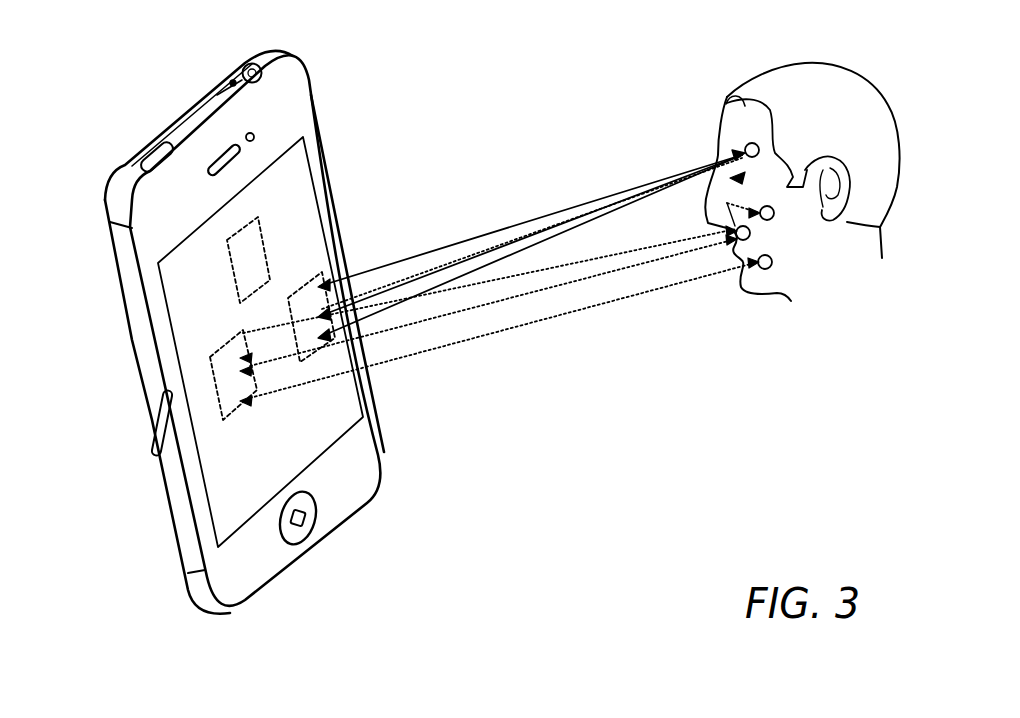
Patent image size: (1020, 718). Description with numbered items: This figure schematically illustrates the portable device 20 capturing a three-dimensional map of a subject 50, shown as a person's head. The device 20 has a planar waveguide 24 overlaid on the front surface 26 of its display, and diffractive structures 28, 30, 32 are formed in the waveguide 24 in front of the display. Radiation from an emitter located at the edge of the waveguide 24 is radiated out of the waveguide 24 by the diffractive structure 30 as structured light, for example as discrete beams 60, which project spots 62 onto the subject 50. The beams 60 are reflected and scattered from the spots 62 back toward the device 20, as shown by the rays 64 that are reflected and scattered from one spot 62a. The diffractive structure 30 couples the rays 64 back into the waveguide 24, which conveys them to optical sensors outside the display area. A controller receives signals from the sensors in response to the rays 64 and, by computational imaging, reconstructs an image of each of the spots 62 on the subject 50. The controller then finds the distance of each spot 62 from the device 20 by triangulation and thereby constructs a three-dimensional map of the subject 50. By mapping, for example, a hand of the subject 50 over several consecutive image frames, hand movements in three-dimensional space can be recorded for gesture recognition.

The portable device 20 is at (82, 75).
The planar waveguide 24 is at (230, 490).
The front surface 26 is at (283, 455).
The diffractive structure 28 is at (262, 232).
The diffractive structure 30 is at (320, 268).
The diffractive structure 32 is at (213, 378).
The subject 50 is at (811, 65).
The discrete beams 60 is at (600, 272).
The spots 62 is at (750, 233).
The spot 62a is at (742, 105).
The rays 64 is at (478, 267).